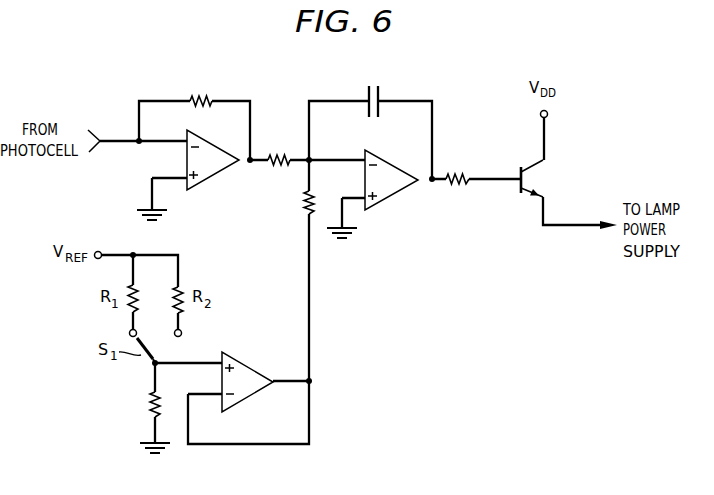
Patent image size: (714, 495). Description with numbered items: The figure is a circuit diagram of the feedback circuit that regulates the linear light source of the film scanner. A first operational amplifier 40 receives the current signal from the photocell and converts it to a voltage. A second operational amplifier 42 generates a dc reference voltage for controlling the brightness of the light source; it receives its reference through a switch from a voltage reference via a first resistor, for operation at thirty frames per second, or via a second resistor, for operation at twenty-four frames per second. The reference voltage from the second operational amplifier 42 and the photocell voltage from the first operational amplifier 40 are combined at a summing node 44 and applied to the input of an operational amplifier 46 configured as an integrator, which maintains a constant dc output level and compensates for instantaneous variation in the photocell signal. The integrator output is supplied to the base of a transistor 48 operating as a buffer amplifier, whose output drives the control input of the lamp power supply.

The first operational amplifier 40 is at (211, 138).
The second operational amplifier 42 is at (244, 362).
The summing node 44 is at (309, 158).
The operational amplifier configured as an integrator 46 is at (390, 156).
The transistor 48 is at (538, 177).